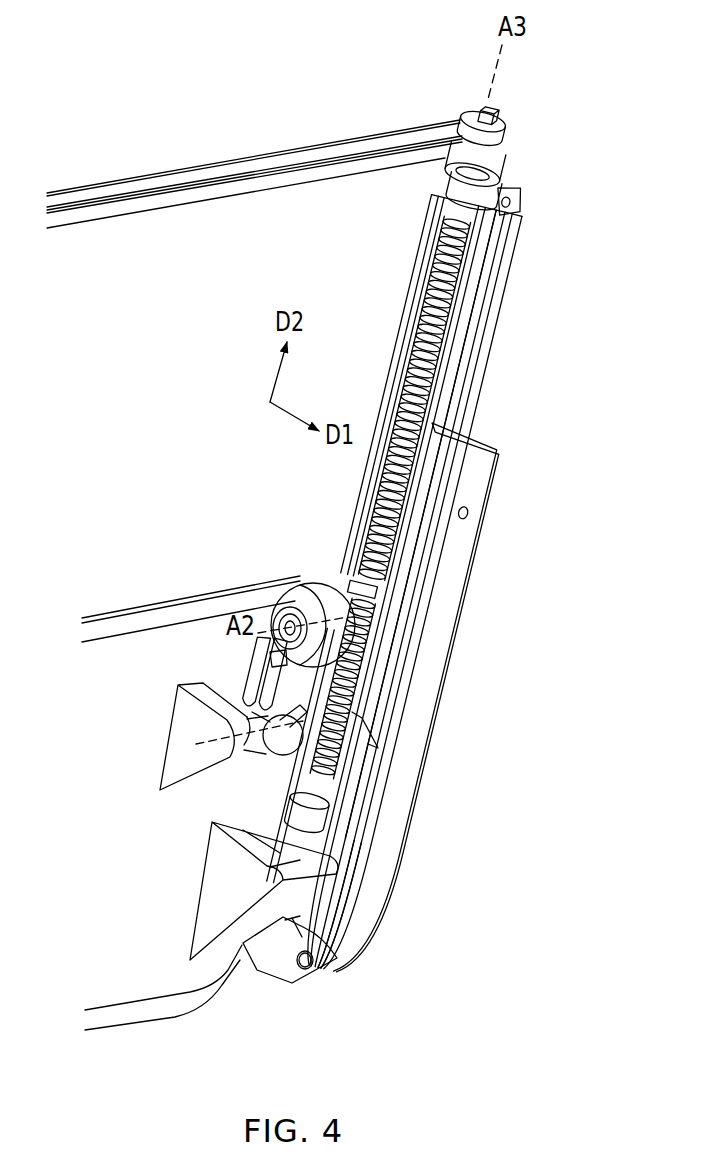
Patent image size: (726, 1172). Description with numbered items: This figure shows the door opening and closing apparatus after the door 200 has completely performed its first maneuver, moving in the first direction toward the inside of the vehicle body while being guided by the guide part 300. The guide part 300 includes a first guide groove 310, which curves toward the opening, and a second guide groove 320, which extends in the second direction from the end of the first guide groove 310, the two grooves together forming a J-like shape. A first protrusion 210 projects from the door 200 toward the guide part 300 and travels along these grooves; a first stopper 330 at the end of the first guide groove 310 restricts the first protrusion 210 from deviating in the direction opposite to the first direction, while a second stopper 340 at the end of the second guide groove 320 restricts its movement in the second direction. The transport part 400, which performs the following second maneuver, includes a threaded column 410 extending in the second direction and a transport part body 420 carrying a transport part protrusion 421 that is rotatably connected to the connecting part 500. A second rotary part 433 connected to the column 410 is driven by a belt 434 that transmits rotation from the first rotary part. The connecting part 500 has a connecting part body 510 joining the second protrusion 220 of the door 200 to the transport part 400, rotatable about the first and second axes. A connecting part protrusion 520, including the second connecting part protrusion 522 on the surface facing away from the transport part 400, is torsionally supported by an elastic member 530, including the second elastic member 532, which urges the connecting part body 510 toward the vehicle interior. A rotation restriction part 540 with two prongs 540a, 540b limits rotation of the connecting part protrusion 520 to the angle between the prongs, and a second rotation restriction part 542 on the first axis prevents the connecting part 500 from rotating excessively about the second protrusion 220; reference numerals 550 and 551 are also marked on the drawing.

The door 200 is at (147, 612).
The first protrusion 210 is at (318, 866).
The second protrusion 220 is at (255, 752).
The guide part 300 is at (319, 618).
The first guide groove 310 is at (330, 958).
The second guide groove 320 is at (367, 782).
The first stopper 330 is at (240, 947).
The second stopper 340 is at (463, 437).
The transport part 400 is at (315, 361).
The column 410 is at (443, 320).
The transport part body 420 is at (385, 595).
The transport part protrusion 421 is at (287, 610).
The second rotary part 433 is at (473, 112).
The belt 434 is at (292, 158).
The connecting part 500 is at (339, 731).
The connecting part body 510 is at (327, 600).
The connecting part protrusion 520 is at (185, 670).
The second connecting part protrusion 522 is at (267, 668).
The elastic member 530 is at (432, 714).
The second elastic member 532 is at (340, 682).
The rotation restriction part 540 is at (322, 821).
The prong 540a is at (250, 690).
The prong 540b is at (357, 717).
The second rotation restriction part 542 is at (352, 805).
The nut unit 550 is at (471, 658).
The nut 551 is at (353, 655).